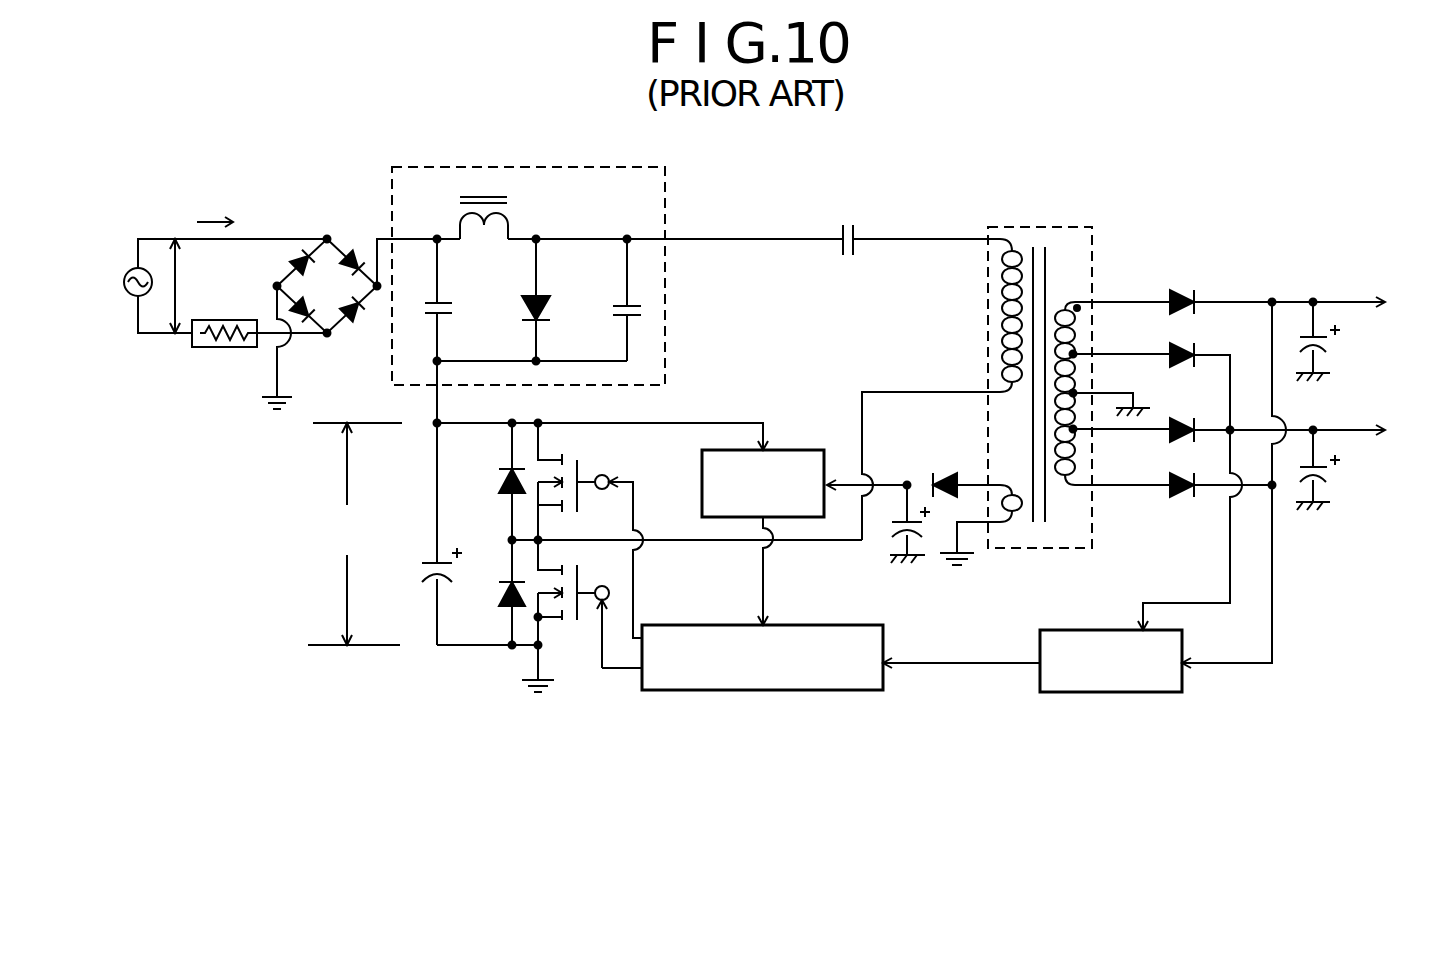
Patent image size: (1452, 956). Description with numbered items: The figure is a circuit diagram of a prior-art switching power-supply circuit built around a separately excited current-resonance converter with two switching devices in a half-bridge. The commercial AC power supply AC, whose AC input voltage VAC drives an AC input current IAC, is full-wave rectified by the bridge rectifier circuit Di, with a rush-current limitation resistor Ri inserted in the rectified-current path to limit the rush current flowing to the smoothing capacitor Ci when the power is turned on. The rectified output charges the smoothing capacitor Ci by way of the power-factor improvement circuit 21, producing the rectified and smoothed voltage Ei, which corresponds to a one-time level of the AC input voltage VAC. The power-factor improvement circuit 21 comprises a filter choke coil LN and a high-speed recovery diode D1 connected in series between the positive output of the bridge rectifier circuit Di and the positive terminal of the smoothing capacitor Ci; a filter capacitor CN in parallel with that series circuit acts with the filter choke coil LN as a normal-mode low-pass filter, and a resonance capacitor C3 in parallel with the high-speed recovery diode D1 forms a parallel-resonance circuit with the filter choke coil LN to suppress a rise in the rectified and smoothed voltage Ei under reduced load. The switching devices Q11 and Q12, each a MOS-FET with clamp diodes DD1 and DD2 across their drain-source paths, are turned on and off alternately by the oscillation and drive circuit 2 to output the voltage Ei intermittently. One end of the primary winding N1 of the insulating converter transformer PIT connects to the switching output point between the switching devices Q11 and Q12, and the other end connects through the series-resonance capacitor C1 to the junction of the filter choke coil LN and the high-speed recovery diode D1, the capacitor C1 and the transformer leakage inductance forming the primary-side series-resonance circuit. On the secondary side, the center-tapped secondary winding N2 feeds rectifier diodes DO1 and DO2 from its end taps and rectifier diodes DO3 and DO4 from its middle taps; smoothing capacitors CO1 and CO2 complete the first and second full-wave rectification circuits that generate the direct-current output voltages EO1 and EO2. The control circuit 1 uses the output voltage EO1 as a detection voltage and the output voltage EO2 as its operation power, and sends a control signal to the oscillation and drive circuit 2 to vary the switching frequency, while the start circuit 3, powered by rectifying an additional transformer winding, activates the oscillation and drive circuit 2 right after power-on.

The control circuit 1 is at (1087, 630).
The oscillation and drive circuit 2 is at (812, 625).
The start circuit 3 is at (795, 450).
The power-factor improvement circuit 21 is at (554, 167).
The commercial AC power supply AC is at (214, 285).
The AC input voltage VAC is at (186, 286).
The AC input current IAC is at (238, 223).
The rush-current limitation resistor Ri is at (224, 349).
The bridge rectifier circuit Di is at (340, 303).
The filter choke coil LN is at (484, 233).
The filter capacitor CN is at (451, 300).
The high-speed recovery diode D1 is at (548, 300).
The resonance capacitor C3 is at (614, 300).
The series-resonance capacitor C1 is at (850, 229).
The rectified and smoothed voltage Ei is at (355, 534).
The smoothing capacitor Ci is at (425, 503).
The clamp diode DD1 is at (485, 481).
The clamp diode DD2 is at (485, 592).
The switching device Q11 is at (590, 530).
The switching device Q12 is at (590, 604).
The insulating converter transformer PIT is at (1040, 371).
The primary winding N1 is at (1000, 320).
The secondary winding N2 is at (1080, 335).
The rectifier diode DO1 is at (1196, 287).
The rectifier diode DO2 is at (1200, 472).
The rectifier diode DO3 is at (1200, 343).
The rectifier diode DO4 is at (1196, 416).
The smoothing capacitor CO1 is at (1342, 341).
The smoothing capacitor CO2 is at (1342, 470).
The direct-current output voltage EO1 is at (1412, 305).
The direct-current output voltage EO2 is at (1412, 435).